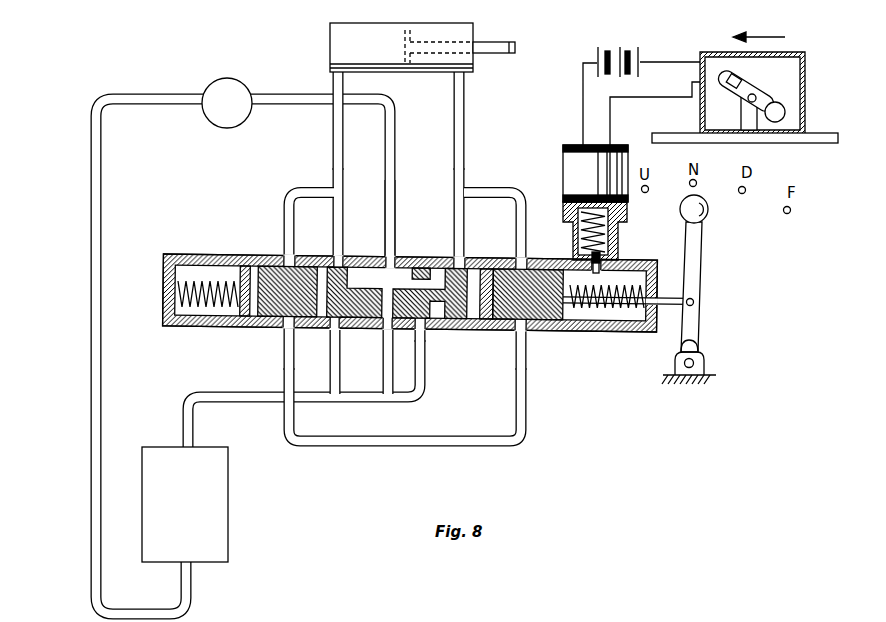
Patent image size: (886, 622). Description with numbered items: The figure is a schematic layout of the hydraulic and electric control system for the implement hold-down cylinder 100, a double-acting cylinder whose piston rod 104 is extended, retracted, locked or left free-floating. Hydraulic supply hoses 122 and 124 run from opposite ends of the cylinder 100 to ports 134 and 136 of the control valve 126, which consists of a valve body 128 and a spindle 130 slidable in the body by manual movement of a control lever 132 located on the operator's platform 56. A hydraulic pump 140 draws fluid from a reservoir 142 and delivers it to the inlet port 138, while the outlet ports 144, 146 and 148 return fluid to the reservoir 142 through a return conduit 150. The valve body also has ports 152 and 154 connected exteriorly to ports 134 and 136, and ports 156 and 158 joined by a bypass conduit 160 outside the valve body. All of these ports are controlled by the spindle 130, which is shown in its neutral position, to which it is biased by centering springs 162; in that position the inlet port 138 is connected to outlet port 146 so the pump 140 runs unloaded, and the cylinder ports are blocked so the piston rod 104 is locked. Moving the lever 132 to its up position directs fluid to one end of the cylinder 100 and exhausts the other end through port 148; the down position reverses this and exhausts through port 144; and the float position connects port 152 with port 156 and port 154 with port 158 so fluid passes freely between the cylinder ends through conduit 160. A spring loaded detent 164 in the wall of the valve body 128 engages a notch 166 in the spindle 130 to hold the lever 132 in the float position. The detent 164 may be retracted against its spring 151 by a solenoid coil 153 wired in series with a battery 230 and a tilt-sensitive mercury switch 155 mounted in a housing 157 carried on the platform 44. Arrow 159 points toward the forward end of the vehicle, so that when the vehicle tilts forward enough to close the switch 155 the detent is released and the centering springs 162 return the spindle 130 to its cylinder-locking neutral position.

The cylinder 100 is at (382, 23).
The piston rod 104 is at (496, 54).
The hydraulic supply hose 122 is at (334, 79).
The hydraulic supply hose 124 is at (465, 95).
The control valve 126 is at (172, 255).
The valve body 128 is at (211, 255).
The spindle 130 is at (264, 328).
The control lever 132 is at (700, 266).
The port 134 is at (338, 258).
The port 136 is at (459, 260).
The inlet port 138 is at (390, 260).
The hydraulic pump 140 is at (228, 78).
The reservoir 142 is at (226, 500).
The outlet port 144 is at (339, 333).
The outlet port 146 is at (383, 340).
The outlet port 148 is at (427, 336).
The return conduit 150 is at (240, 397).
The spring 151 is at (608, 238).
The port 152 is at (289, 258).
The solenoid coil 153 is at (565, 172).
The port 154 is at (521, 260).
The mercury switch 155 is at (775, 100).
The port 156 is at (289, 335).
The housing 157 is at (806, 63).
The port 158 is at (527, 338).
The arrow 159 is at (760, 36).
The conduit 160 is at (402, 440).
The centering springs 162 is at (179, 288).
The spring loaded detent 164 is at (610, 270).
The notch 166 is at (558, 268).
The battery 230 is at (597, 56).
The platform 44 is at (817, 143).
The operator's platform 56 is at (700, 362).